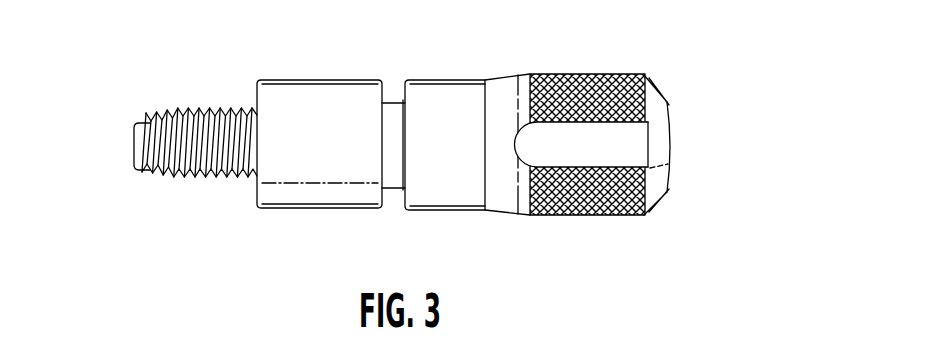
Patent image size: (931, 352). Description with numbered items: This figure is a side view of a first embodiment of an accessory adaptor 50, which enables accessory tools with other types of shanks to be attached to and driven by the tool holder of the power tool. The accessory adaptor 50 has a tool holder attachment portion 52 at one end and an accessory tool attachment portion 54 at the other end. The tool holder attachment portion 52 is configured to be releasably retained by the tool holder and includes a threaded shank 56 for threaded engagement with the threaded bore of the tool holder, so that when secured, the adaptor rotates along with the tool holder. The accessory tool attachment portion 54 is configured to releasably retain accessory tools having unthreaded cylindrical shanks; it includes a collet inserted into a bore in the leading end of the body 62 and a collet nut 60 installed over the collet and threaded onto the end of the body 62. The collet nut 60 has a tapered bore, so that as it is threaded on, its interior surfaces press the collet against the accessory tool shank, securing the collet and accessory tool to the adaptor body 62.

The accessory adaptor 50 is at (727, 85).
The tool holder attachment portion 52 is at (109, 111).
The accessory tool attachment portion 54 is at (693, 165).
The threaded shank 56 is at (159, 172).
The collet nut 60 is at (597, 215).
The body 62 is at (298, 208).